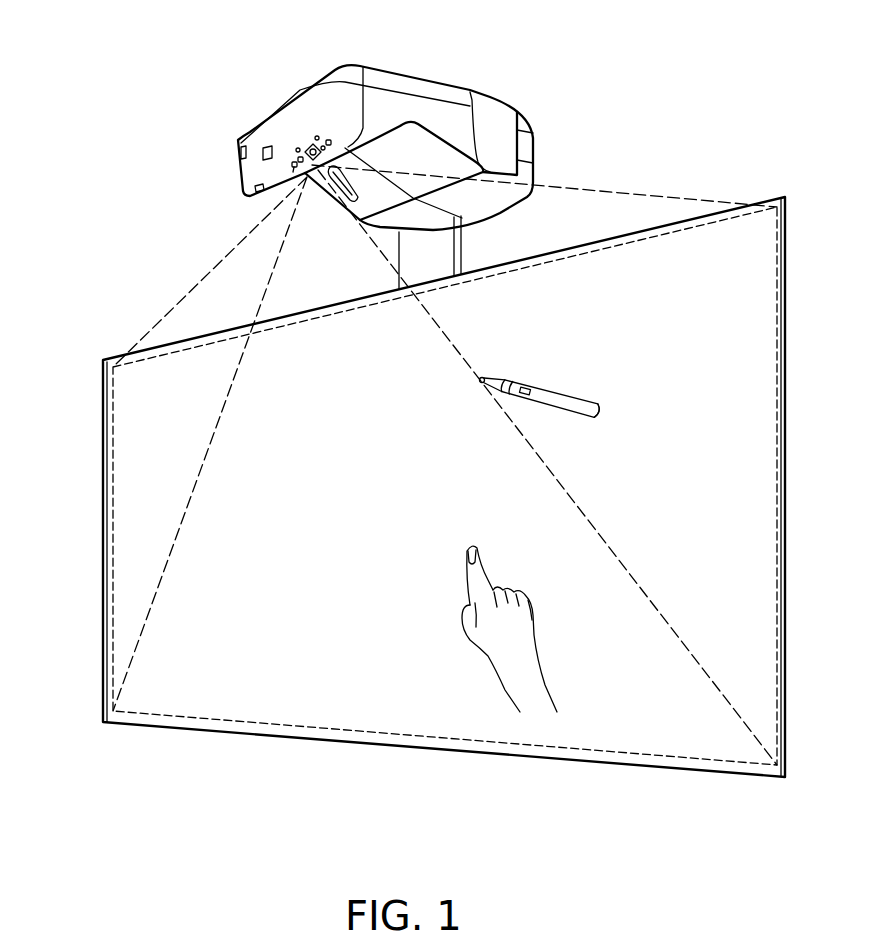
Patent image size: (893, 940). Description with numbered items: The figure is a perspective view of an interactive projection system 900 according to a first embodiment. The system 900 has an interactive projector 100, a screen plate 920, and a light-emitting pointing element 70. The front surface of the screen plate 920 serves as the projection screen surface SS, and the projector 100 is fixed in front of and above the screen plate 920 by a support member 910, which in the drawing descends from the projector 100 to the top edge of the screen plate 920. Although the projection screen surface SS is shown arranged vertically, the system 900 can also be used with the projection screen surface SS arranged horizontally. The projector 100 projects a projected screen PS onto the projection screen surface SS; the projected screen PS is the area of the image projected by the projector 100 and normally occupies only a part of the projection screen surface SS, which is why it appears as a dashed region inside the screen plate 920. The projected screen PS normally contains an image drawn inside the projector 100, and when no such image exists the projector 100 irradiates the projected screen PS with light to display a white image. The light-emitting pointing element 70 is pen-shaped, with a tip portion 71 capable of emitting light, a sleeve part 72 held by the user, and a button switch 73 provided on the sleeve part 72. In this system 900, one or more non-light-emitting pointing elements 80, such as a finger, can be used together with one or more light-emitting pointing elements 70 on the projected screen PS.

The interactive projection system 900 is at (132, 113).
The interactive projector 100 is at (421, 78).
The support member 910 is at (463, 238).
The screen plate 920 is at (770, 197).
The light-emitting pointing element 70 is at (533, 398).
The tip portion 71 is at (485, 378).
The sleeve part 72 is at (573, 418).
The button switch 73 is at (523, 396).
The non-light-emitting pointing element 80 is at (477, 573).
The projected screen PS is at (111, 417).
The projection screen surface SS is at (103, 542).